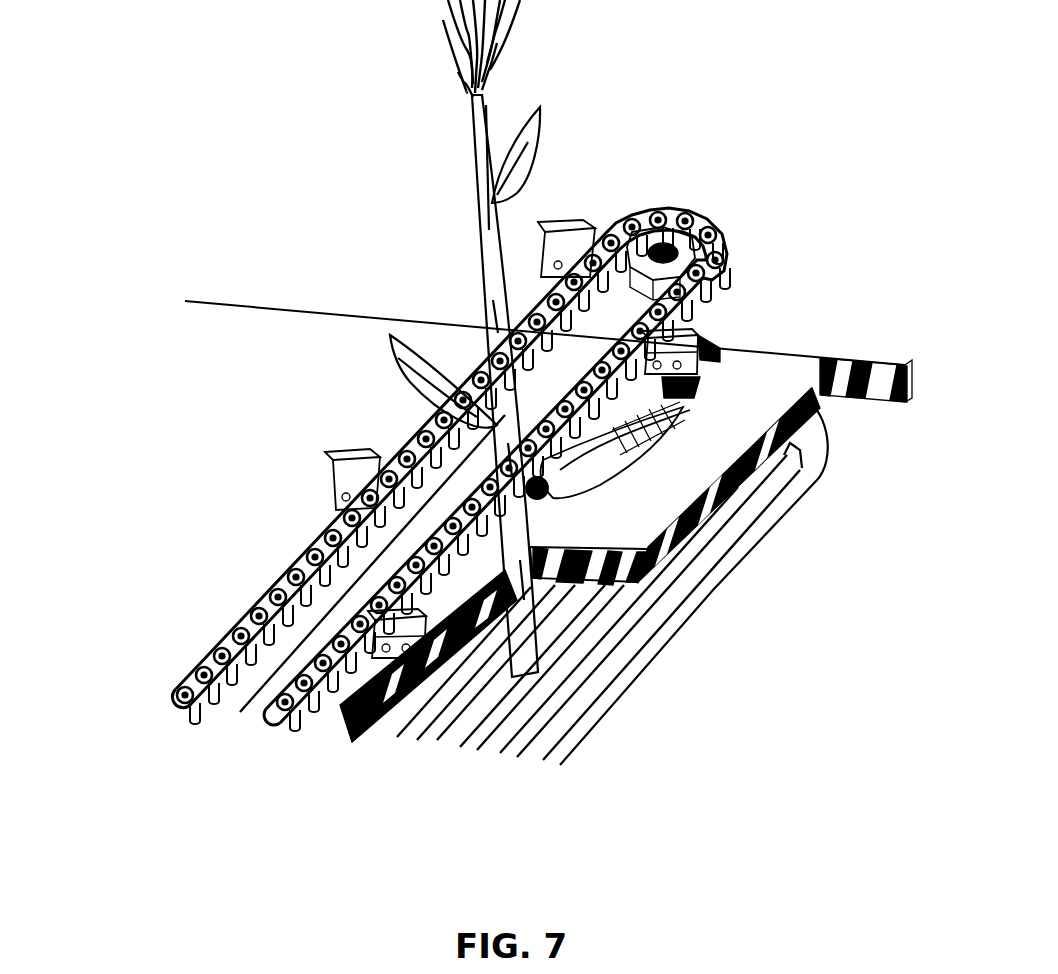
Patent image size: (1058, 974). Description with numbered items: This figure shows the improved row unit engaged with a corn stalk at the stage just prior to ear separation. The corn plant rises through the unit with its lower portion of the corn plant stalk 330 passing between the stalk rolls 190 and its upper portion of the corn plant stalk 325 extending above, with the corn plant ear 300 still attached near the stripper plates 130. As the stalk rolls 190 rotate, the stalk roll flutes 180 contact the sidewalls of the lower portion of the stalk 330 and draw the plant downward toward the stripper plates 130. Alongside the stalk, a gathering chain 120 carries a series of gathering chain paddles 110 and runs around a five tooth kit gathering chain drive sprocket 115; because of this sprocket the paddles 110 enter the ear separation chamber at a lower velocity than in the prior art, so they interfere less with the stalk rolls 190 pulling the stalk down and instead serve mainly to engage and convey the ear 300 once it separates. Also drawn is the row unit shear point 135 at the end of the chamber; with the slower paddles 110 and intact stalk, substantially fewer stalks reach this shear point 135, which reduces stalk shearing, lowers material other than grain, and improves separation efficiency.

The gathering chain paddles 110 is at (560, 243).
The 5 tooth (kit) gathering chain drive sprocket 115 is at (665, 237).
The gathering chain 120 is at (262, 716).
The stripper plates 130 is at (137, 377).
The row unit shear point 135 is at (690, 350).
The stalk roll flutes 180 is at (710, 547).
The stalk rolls 190 is at (808, 447).
The corn plant ear 300 is at (683, 410).
The upper portion of the corn plant stalk 325 is at (462, 83).
The lower portion of the corn plant stalk 330 is at (480, 290).